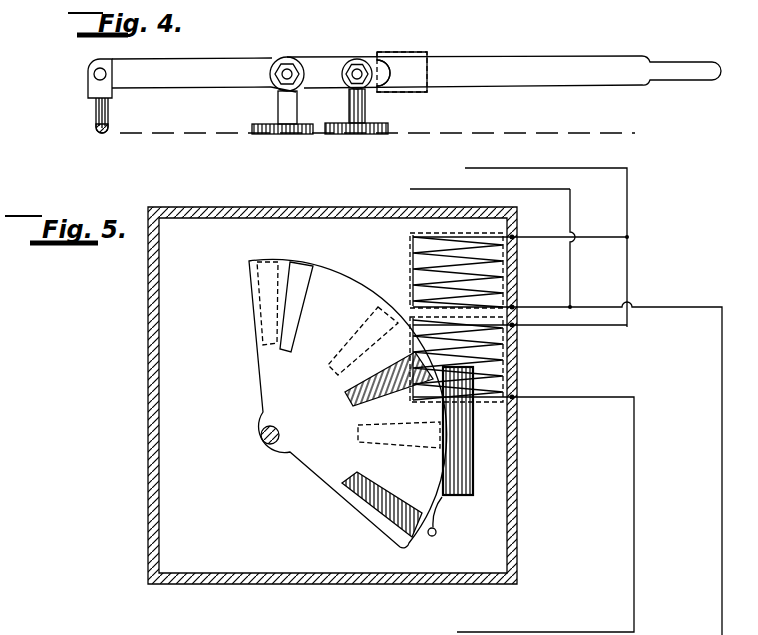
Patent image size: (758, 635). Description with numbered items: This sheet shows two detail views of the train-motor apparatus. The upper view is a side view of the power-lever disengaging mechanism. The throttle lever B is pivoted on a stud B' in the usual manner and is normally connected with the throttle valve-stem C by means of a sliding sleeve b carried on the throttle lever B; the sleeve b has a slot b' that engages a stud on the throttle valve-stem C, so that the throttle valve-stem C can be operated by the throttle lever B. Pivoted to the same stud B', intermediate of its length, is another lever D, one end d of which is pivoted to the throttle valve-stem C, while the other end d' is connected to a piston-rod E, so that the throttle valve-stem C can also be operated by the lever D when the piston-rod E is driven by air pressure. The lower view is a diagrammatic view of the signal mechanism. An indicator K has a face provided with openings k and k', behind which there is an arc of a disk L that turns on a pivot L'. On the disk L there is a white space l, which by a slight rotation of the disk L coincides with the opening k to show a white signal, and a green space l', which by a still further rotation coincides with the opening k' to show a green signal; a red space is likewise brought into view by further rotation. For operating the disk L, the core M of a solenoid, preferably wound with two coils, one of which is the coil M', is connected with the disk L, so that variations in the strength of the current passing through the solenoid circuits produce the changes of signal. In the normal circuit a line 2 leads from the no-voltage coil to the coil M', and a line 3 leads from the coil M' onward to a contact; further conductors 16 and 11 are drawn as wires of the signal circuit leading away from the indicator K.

In FIG. 4, the lever D is at (192, 78).
In FIG. 4, the pin of lever arm d' is at (111, 74).
In FIG. 4, the piston-rod E is at (116, 111).
In FIG. 4, the stud B' is at (273, 74).
In FIG. 4, the throttle valve-stem C is at (370, 106).
In FIG. 4, the end of lever d is at (347, 74).
In FIG. 4, the throttle lever B is at (504, 72).
In FIG. 4, the sliding sleeve b is at (402, 72).
In FIG. 4, the slot b' is at (395, 50).
In FIG. 5, the indicator K is at (332, 395).
In FIG. 5, the disk L is at (348, 404).
In FIG. 5, the pivot L' is at (287, 435).
In FIG. 5, the opening k is at (267, 294).
In FIG. 5, the white space l is at (295, 307).
In FIG. 5, the opening k' is at (367, 341).
In FIG. 5, the green space l' is at (389, 376).
In FIG. 5, the coil M' is at (492, 359).
In FIG. 5, the core M is at (464, 451).
In FIG. 5, the line 2 is at (540, 168).
In FIG. 5, the wire 16 is at (447, 192).
In FIG. 5, the wire 11 is at (666, 313).
In FIG. 5, the line 3 is at (580, 397).